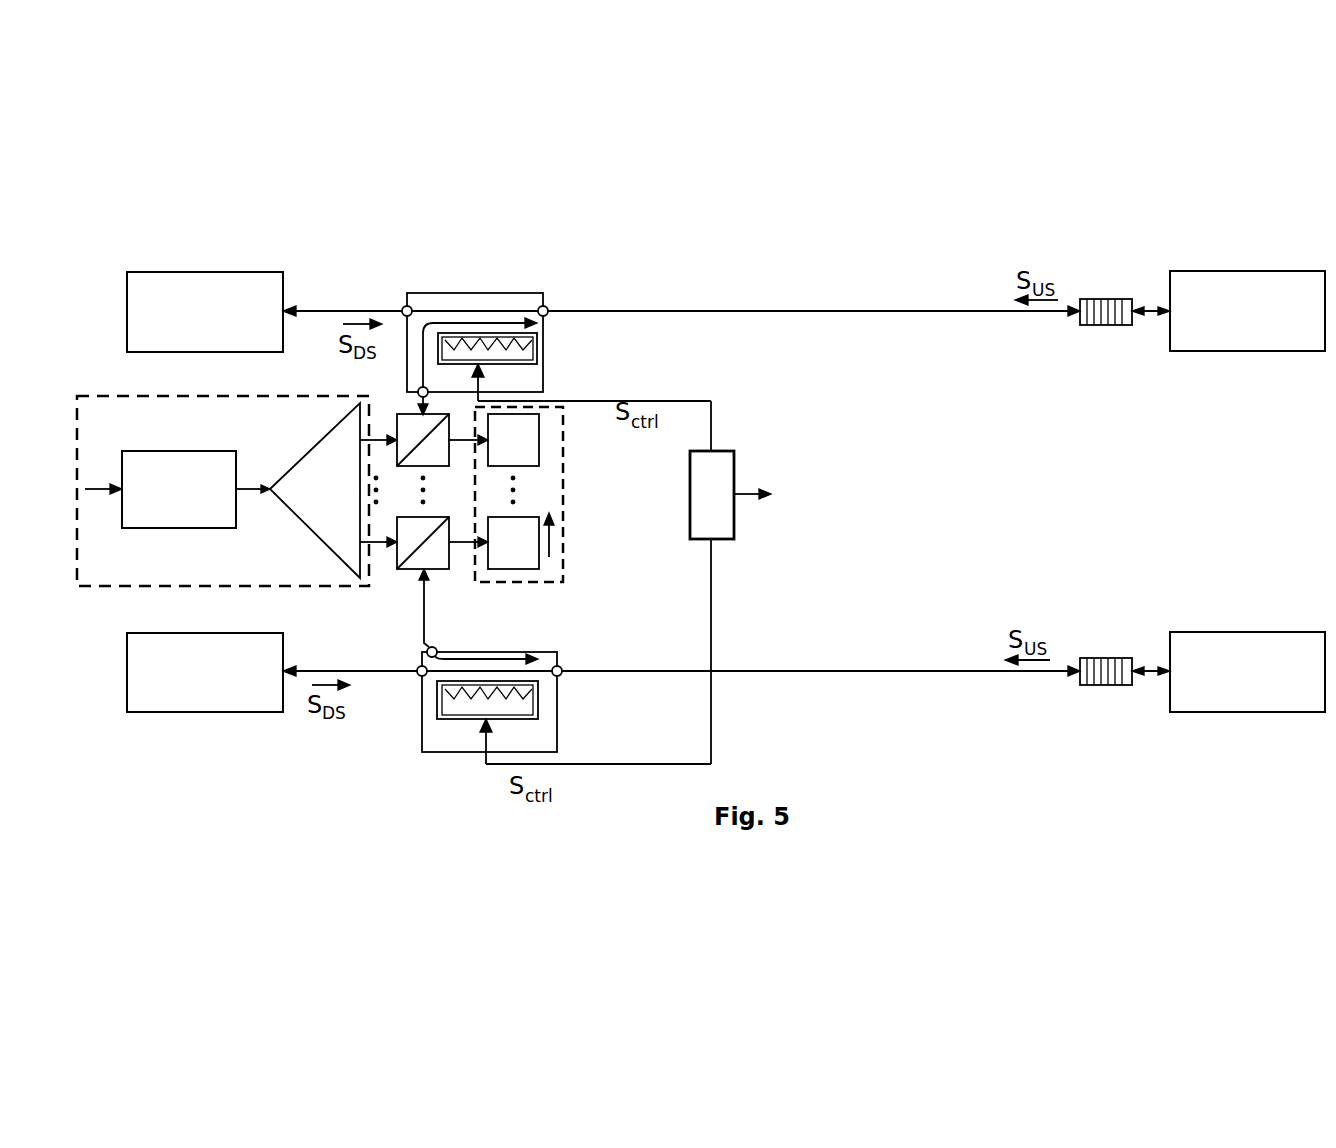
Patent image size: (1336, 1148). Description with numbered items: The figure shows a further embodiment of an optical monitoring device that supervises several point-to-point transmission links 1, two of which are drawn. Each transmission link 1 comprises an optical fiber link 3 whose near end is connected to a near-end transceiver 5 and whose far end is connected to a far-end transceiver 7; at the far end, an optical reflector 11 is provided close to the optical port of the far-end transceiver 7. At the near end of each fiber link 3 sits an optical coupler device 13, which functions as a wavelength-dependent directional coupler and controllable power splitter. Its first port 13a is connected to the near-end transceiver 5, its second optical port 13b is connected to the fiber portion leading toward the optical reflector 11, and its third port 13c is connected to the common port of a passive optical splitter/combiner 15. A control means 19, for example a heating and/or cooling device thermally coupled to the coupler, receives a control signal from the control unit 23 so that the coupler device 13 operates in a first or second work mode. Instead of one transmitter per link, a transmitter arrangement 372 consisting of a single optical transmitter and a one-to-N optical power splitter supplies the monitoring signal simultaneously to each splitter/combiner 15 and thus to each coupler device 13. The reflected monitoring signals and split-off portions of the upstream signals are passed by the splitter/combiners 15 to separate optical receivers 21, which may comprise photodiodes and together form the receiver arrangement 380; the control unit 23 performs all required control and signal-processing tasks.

The PtP transmission link 1 is at (986, 222).
The optical fiber link 3 is at (830, 303).
The near-end transceiver 5 is at (236, 280).
The far-end transceiver 7 is at (1258, 279).
The optical reflector 11 is at (1110, 298).
The optical coupler device 13 is at (482, 491).
The first port 13a is at (404, 307).
The second optical port 13b is at (418, 393).
The third port 13c is at (548, 308).
The passive optical splitter/combiner 15 is at (440, 437).
The control means 19 is at (538, 346).
The optical receiver 21 is at (536, 428).
The control unit 23 is at (722, 515).
The transmitter arrangement 372 is at (105, 594).
The receiver arrangement 380 is at (551, 499).